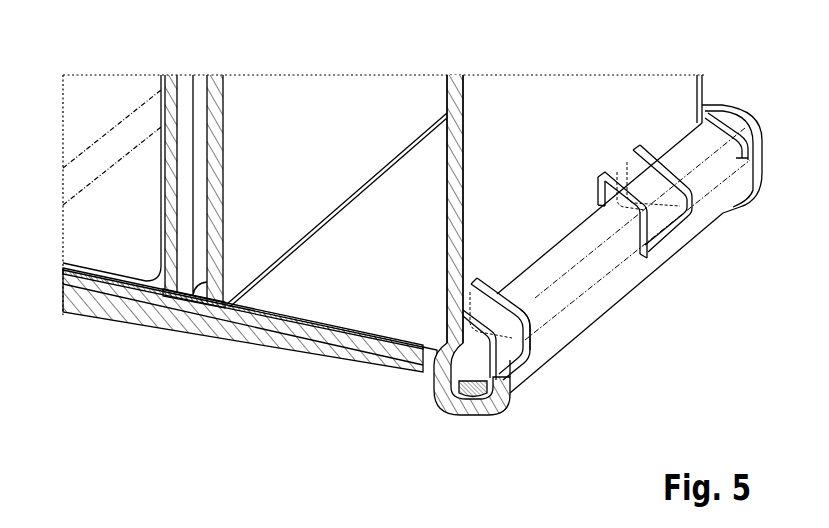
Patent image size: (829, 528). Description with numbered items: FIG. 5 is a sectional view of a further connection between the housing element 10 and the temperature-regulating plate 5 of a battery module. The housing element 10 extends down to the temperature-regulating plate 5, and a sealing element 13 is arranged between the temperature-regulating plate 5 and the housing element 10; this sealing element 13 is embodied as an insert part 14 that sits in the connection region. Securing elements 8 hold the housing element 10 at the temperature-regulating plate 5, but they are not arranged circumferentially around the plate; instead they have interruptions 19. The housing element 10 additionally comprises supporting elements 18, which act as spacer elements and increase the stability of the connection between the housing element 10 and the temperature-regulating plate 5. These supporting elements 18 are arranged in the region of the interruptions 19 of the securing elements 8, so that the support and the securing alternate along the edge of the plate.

The temperature-regulating plate 5 is at (337, 337).
The securing element 8 is at (563, 273).
The housing element 10 is at (455, 90).
The sealing element 13 is at (457, 418).
The insert part 14 is at (473, 394).
The supporting element 18 is at (517, 358).
The interruption 19 is at (538, 337).